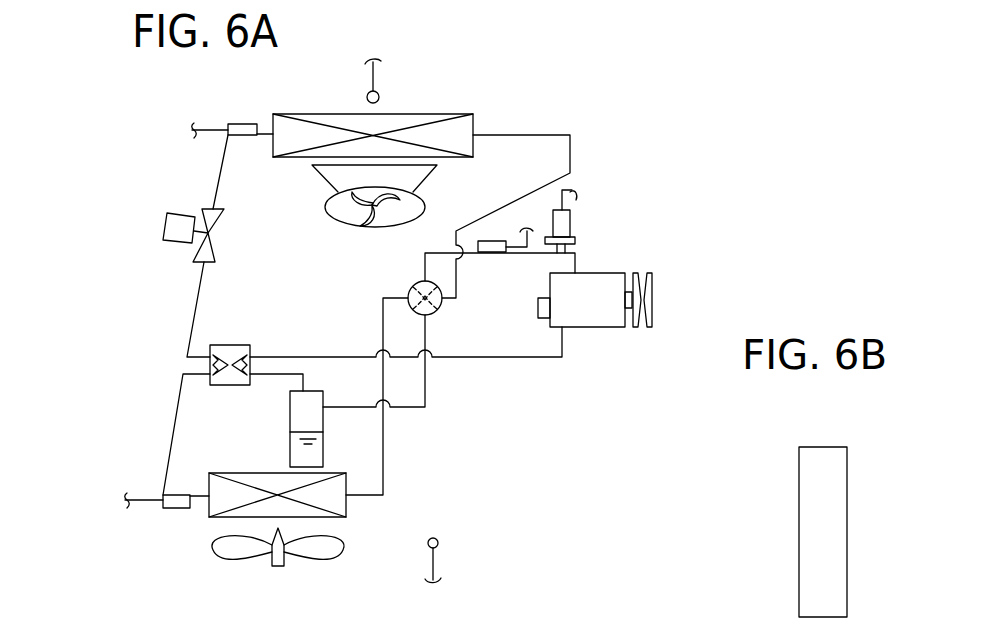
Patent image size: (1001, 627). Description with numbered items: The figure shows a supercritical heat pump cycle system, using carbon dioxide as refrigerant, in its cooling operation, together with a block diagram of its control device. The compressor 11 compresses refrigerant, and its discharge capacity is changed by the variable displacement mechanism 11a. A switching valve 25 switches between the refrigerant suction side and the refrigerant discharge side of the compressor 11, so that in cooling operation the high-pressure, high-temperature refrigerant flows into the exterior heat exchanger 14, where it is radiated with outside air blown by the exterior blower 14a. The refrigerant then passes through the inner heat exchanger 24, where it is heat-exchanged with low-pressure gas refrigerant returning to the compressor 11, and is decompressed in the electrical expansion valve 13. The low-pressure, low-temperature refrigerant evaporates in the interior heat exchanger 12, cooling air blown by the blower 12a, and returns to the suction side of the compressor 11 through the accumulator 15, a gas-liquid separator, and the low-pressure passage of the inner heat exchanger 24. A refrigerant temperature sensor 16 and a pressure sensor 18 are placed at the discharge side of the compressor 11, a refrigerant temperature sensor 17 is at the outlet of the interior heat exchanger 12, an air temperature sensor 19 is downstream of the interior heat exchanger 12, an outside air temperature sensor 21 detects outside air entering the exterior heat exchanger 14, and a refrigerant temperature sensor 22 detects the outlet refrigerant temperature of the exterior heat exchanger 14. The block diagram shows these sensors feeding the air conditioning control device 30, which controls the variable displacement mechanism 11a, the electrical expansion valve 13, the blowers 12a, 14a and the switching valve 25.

In FIG. 6A, the compressor 11 is at (612, 276).
In FIG. 6A, the variable displacement mechanism 11a is at (538, 306).
In FIG. 6B, the variable displacement mechanism 11a is at (799, 467).
In FIG. 6A, the interior heat exchanger 12 is at (461, 128).
In FIG. 6A, the blower 12a is at (340, 226).
In FIG. 6B, the blower 12a is at (799, 493).
In FIG. 6A, the electrical expansion valve 13 is at (166, 226).
In FIG. 6B, the electrical expansion valve 13 is at (799, 520).
In FIG. 6A, the exterior heat exchanger 14 is at (222, 485).
In FIG. 6A, the exterior blower 14a is at (315, 553).
In FIG. 6B, the exterior blower 14a is at (799, 546).
In FIG. 6A, the accumulator 15 is at (290, 412).
In FIG. 6A, the refrigerant temperature sensor 16 is at (490, 252).
In FIG. 6B, the refrigerant temperature sensor 16 is at (847, 467).
In FIG. 6A, the refrigerant temperature sensor 17 is at (239, 124).
In FIG. 6B, the refrigerant temperature sensor 17 is at (847, 493).
In FIG. 6A, the pressure sensor 18 is at (566, 220).
In FIG. 6B, the pressure sensor 18 is at (847, 520).
In FIG. 6A, the air temperature sensor 19 is at (380, 97).
In FIG. 6B, the air temperature sensor 19 is at (847, 546).
In FIG. 6A, the outside air temperature sensor 21 is at (428, 543).
In FIG. 6B, the outside air temperature sensor 21 is at (847, 573).
In FIG. 6A, the refrigerant temperature sensor 22 is at (175, 509).
In FIG. 6B, the refrigerant temperature sensor 22 is at (847, 598).
In FIG. 6A, the inner heat exchanger 24 is at (233, 346).
In FIG. 6A, the switching valve 25 is at (412, 286).
In FIG. 6B, the switching valve 25 is at (799, 573).
In FIG. 6B, the air conditioning control device 30 is at (822, 455).